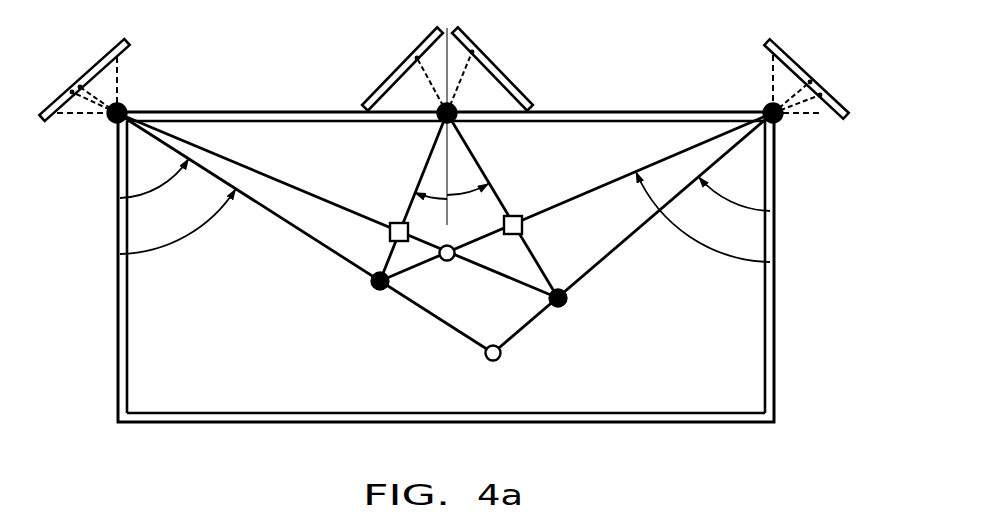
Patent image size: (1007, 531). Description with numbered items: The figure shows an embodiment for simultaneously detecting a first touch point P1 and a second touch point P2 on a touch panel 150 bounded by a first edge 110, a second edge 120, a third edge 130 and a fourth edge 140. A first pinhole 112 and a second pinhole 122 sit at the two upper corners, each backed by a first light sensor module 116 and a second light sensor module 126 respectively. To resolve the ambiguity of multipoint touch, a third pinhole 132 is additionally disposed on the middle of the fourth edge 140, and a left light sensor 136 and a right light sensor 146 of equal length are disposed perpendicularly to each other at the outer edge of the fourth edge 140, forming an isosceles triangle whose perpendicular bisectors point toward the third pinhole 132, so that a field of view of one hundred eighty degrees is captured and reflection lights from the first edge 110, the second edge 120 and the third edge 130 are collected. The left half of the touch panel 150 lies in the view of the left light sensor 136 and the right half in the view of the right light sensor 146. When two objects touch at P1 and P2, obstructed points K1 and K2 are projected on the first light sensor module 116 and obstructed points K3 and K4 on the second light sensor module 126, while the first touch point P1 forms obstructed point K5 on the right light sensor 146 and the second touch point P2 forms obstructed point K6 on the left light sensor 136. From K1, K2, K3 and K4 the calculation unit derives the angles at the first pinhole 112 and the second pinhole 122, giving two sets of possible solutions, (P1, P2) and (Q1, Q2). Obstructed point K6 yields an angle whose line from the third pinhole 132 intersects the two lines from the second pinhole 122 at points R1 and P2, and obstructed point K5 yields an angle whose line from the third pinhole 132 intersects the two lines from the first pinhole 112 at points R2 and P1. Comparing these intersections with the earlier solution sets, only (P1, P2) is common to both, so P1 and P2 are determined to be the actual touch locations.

The first edge 110 is at (776, 380).
The second edge 120 is at (117, 380).
The third edge 130 is at (697, 424).
The fourth edge 140 is at (641, 112).
The touch panel 150 is at (724, 373).
The first pinhole 112 is at (765, 108).
The second pinhole 122 is at (125, 108).
The third pinhole 132 is at (458, 118).
The first light sensor module 116 is at (843, 122).
The second light sensor module 126 is at (48, 120).
The left light sensor 136 is at (527, 100).
The right light sensor 146 is at (370, 100).
The obstructed point K1 is at (810, 80).
The obstructed point K2 is at (820, 93).
The obstructed point K3 is at (74, 90).
The obstructed point K4 is at (81, 85).
The obstructed point K5 is at (417, 58).
The obstructed point K6 is at (472, 52).
The first touch point P1 is at (558, 289).
The second touch point P2 is at (371, 281).
The possible solution point Q1 is at (452, 261).
The possible solution point Q2 is at (485, 353).
The intersection point R1 is at (393, 222).
The intersection point R2 is at (521, 216).